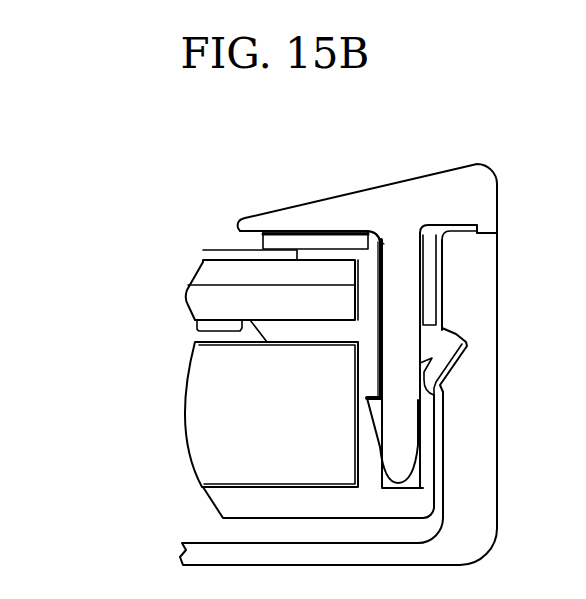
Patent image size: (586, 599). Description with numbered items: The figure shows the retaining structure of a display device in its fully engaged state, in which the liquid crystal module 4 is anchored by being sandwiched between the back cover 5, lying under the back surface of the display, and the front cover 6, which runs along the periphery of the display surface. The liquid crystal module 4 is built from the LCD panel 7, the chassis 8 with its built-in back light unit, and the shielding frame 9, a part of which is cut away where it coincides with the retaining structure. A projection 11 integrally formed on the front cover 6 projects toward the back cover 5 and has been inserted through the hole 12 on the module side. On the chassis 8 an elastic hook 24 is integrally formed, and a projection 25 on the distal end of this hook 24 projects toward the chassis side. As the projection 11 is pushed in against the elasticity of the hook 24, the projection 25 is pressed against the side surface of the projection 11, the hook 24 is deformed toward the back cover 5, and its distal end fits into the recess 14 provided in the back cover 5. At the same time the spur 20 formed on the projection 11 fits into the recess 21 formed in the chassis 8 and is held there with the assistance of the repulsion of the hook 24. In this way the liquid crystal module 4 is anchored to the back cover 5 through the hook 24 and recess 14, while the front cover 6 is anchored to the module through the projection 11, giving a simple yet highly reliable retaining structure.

The liquid crystal module 4 is at (130, 410).
The back cover 5 is at (483, 475).
The front cover 6 is at (435, 175).
The LCD panel 7 is at (203, 303).
The chassis 8 is at (227, 502).
The shielding frame 9 is at (309, 237).
The projection 11 is at (383, 345).
The hole 12 is at (382, 244).
The recess 14 is at (447, 342).
The spur 20 is at (380, 430).
The recess 21 is at (372, 400).
The hook 24 is at (433, 384).
The projection 25 is at (447, 340).